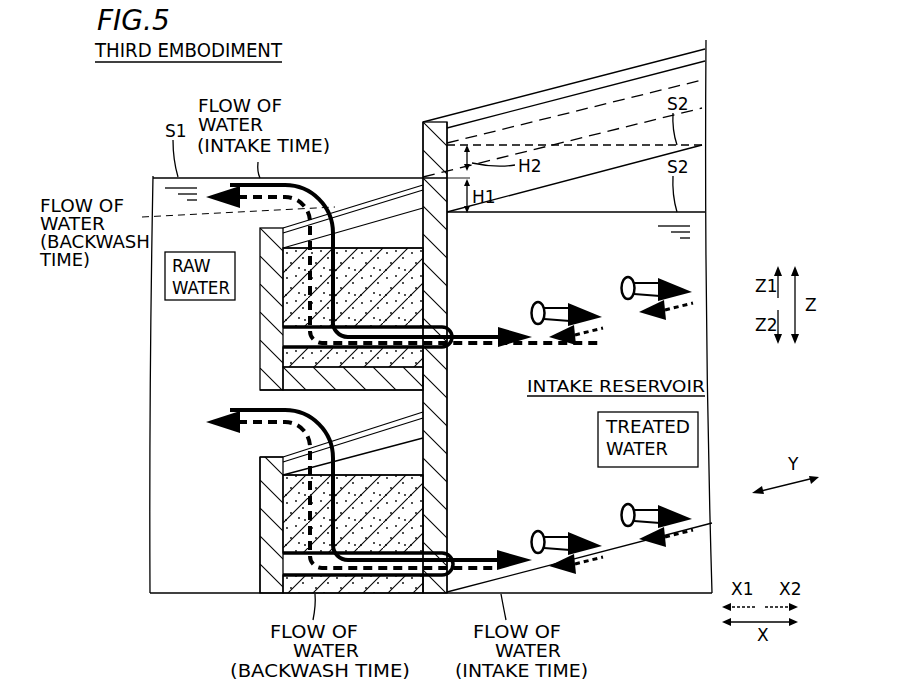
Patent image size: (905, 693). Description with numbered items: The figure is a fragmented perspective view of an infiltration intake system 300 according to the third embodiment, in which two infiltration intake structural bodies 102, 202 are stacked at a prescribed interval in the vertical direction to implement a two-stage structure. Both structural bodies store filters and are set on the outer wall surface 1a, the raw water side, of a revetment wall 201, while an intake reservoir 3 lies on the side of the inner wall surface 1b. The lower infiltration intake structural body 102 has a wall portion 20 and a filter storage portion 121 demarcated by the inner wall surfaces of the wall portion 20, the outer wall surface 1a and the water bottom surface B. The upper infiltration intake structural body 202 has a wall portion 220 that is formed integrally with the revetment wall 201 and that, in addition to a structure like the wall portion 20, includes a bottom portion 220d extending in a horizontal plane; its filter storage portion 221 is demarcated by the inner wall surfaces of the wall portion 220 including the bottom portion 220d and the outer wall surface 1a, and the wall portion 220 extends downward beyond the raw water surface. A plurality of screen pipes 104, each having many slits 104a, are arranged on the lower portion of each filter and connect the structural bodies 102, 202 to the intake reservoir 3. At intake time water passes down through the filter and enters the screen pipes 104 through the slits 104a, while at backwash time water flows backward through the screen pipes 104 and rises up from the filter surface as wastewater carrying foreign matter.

The infiltration intake system 300 is at (349, 143).
The intake reservoir 3 is at (696, 270).
The outer wall surface 1a is at (421, 138).
The inner wall surface 1b is at (488, 127).
The revetment wall 201 is at (433, 122).
The infiltration intake structural body 202 is at (338, 295).
The infiltration intake structural body 102 is at (333, 521).
The wall portion 20 is at (262, 594).
The filter storage portion 221 is at (398, 228).
The filter storage portion 121 is at (440, 405).
The wall portion 220 is at (273, 375).
The bottom portion 220d is at (410, 376).
The screen pipe 104 is at (303, 342).
The slits 104a is at (290, 350).
The water bottom surface B is at (178, 593).